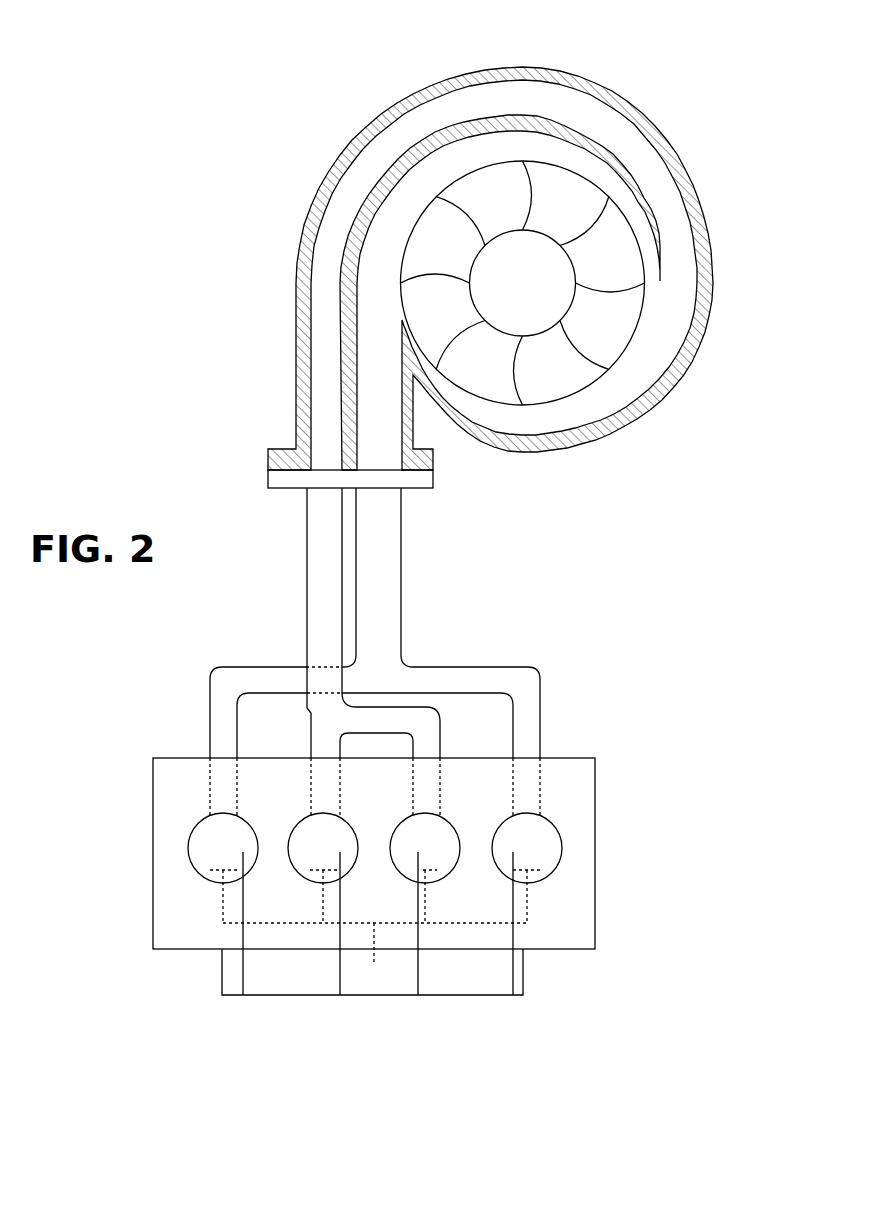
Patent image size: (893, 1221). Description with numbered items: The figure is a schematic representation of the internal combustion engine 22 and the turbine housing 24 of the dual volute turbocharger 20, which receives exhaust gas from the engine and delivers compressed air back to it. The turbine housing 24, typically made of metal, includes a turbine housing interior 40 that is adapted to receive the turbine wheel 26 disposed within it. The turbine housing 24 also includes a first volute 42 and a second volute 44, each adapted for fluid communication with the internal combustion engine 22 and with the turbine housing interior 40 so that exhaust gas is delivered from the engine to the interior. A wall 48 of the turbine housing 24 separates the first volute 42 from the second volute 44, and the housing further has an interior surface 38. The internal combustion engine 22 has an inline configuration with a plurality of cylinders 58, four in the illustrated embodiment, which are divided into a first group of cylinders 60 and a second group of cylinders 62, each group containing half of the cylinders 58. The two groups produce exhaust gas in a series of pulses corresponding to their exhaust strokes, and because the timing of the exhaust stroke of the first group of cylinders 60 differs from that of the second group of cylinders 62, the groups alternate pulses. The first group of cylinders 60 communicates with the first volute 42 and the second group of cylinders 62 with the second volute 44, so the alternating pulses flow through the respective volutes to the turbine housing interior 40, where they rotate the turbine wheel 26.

The dual volute turbocharger 20 is at (692, 97).
The internal combustion engine 22 is at (596, 862).
The turbine housing 24 is at (338, 153).
The turbine wheel 26 is at (613, 322).
The interior surface 38 is at (462, 93).
The turbine housing interior 40 is at (573, 414).
The first volute 42 is at (324, 376).
The second volute 44 is at (379, 421).
The wall 48 is at (348, 315).
The cylinders 58 is at (217, 850).
The first group of cylinders 60 is at (418, 995).
The second group of cylinders 62 is at (513, 995).